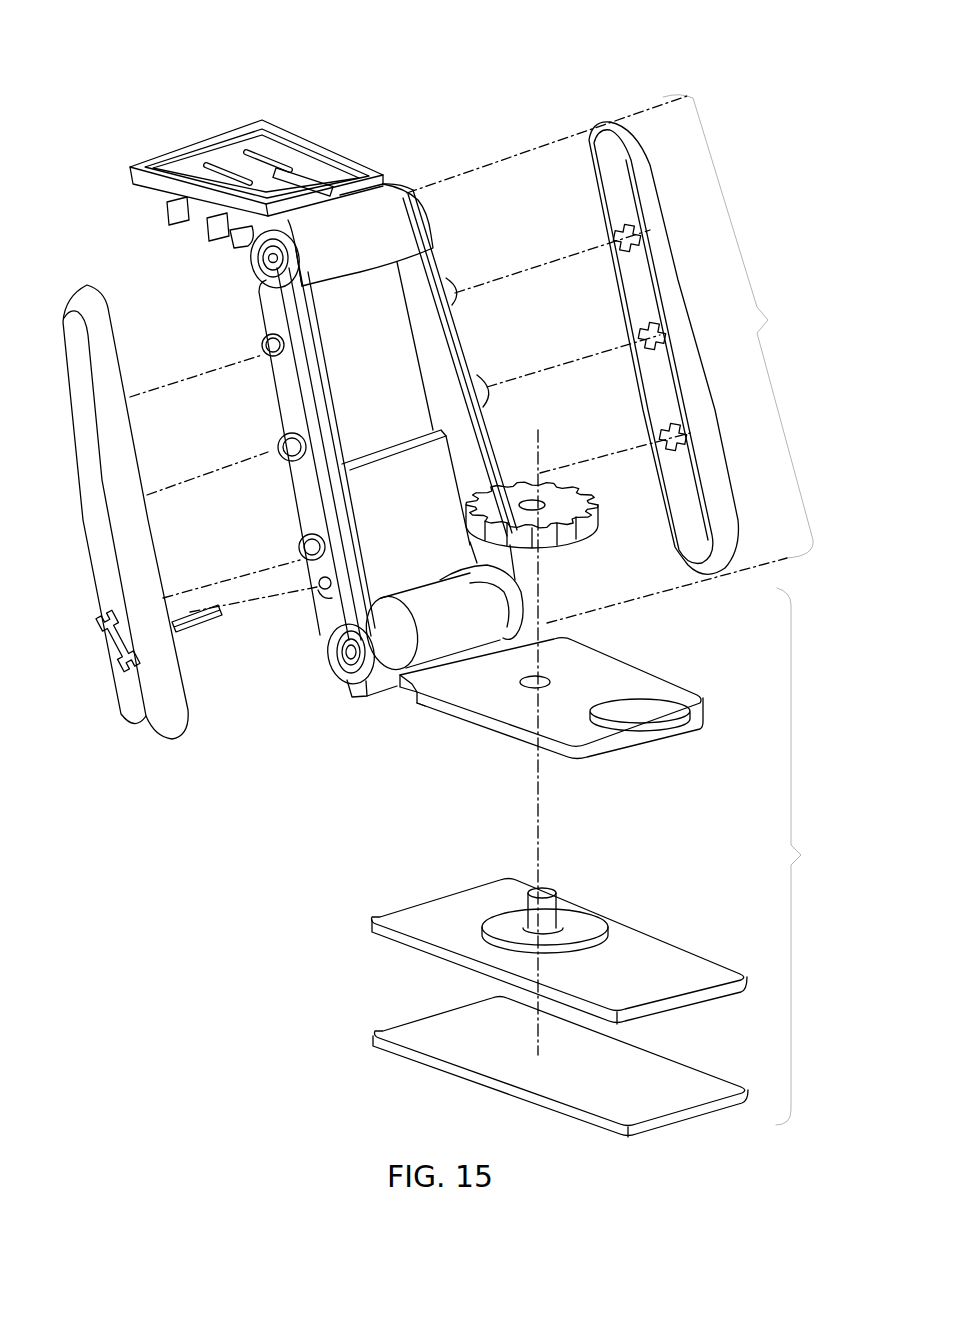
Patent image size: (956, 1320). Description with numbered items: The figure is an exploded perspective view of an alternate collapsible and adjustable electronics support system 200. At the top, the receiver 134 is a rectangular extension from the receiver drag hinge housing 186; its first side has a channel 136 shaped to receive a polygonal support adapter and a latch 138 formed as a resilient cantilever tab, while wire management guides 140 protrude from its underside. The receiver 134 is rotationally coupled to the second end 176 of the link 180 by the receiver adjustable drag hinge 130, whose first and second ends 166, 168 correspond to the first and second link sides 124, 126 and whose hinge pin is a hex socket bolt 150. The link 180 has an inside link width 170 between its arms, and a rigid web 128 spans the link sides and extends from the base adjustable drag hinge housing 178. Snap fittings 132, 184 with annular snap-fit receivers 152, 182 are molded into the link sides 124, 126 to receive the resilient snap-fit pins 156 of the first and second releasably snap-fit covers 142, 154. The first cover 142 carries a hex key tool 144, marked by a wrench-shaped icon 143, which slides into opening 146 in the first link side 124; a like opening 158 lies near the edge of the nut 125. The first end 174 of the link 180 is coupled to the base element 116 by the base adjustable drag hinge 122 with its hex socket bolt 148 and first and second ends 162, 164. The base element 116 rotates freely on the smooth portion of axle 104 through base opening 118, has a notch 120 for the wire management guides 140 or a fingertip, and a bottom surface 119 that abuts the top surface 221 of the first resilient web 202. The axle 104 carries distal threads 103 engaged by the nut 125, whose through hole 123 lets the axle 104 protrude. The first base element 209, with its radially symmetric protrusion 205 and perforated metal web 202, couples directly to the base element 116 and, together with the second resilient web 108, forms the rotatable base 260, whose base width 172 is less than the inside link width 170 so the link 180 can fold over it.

The collapsible and adjustable electronics support system 200 is at (152, 66).
The receiver 134 is at (143, 170).
The channel 136 is at (278, 128).
The latch 138 is at (305, 186).
The wire management guides 140 is at (203, 237).
The first end of receiver adjustable drag hinge 166 is at (262, 252).
The hex socket bolt 150 is at (268, 263).
The second end of receiver adjustable drag hinge 168 is at (414, 190).
The receiver adjustable drag hinge 130 is at (432, 195).
The second end of link 176 is at (422, 201).
The snap-fit receiver 182 is at (452, 282).
The snap fitting 184 is at (465, 343).
The receiver drag hinge housing 186 is at (367, 254).
The inside link width 170 is at (436, 284).
The snap fitting 132 is at (266, 307).
The snap-fit receiver 152 is at (268, 335).
The first link side 124 is at (318, 373).
The second link side 126 is at (428, 328).
The rigid web 128 is at (417, 521).
The opening 158 is at (466, 552).
The through hole 123 is at (547, 488).
The nut 125 is at (572, 535).
The second end of base adjustable drag hinge 164 is at (523, 594).
The base adjustable drag hinge housing 178 is at (454, 624).
The opening 146 is at (330, 584).
The hex socket bolt 148 is at (347, 652).
The first end of link 174 is at (338, 665).
The first end of base adjustable drag hinge 162 is at (357, 676).
The base adjustable drag hinge 122 is at (348, 693).
The base width 172 is at (565, 649).
The base opening 118 is at (543, 675).
The third base element 116 is at (587, 690).
The notch 120 is at (633, 717).
The bottom surface 119 is at (447, 722).
The icon 143 is at (108, 643).
The tool 144 is at (200, 632).
The first releasably snap-fit cover 142 is at (148, 733).
The second releasably snap-fit cover 154 is at (722, 522).
The snap-fit pins 156 is at (614, 240).
The link 180 is at (738, 326).
The rotatable base 260 is at (826, 856).
The first resilient web 202 is at (398, 915).
The first base element 209 is at (356, 920).
The radially symmetric protrusion 205 is at (507, 940).
The distal threads 103 is at (530, 903).
The axle 104 is at (550, 918).
The top surface 221 is at (693, 973).
The second resilient web 108 is at (540, 1083).